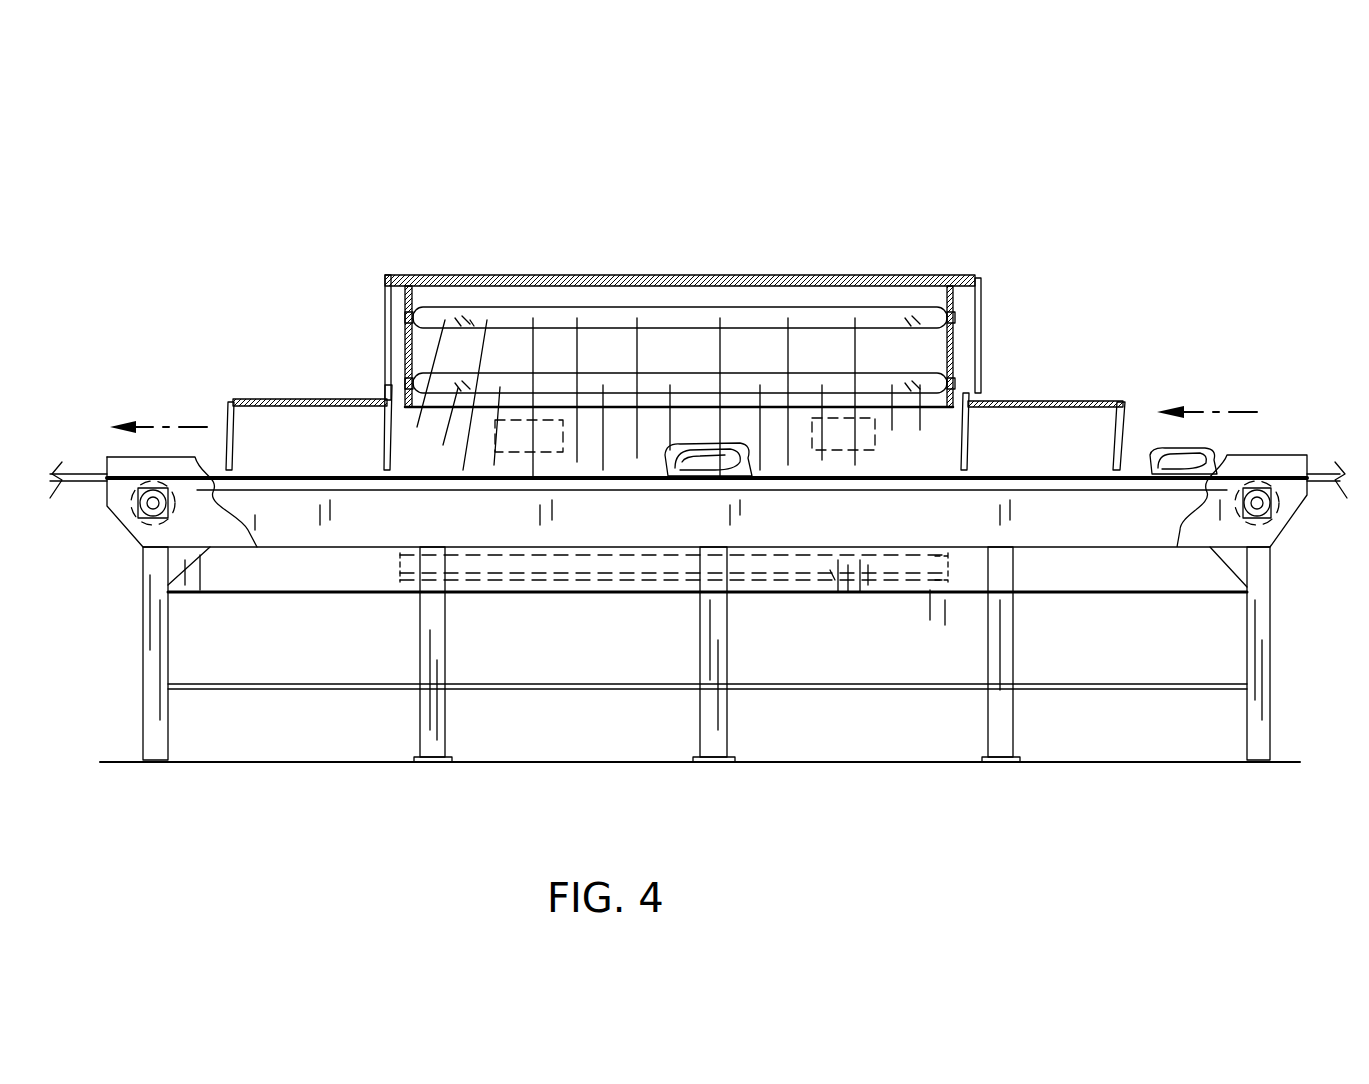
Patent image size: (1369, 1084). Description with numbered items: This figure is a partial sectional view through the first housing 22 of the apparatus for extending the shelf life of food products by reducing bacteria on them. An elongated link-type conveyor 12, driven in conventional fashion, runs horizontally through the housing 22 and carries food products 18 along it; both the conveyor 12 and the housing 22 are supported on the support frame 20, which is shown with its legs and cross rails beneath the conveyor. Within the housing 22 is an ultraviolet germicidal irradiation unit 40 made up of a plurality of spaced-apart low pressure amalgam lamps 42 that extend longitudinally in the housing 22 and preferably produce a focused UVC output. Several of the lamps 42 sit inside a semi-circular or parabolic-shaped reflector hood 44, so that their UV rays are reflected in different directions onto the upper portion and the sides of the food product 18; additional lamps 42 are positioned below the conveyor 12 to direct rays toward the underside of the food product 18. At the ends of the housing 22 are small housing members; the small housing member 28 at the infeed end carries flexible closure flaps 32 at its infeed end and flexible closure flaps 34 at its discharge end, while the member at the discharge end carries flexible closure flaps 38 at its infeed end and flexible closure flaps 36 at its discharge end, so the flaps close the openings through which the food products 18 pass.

The conveyor 12 is at (1326, 462).
The food products 18 is at (1200, 445).
The support frame 20 is at (688, 755).
The first housing 22 is at (913, 265).
The small housing member 28 is at (1070, 400).
The flexible closure flaps 32 is at (1120, 405).
The flexible closure flaps 34 is at (968, 440).
The flexible closure flaps 36 is at (246, 440).
The flexible closure flaps 38 is at (383, 440).
The ultraviolet germicidal irradiation unit 40 is at (687, 290).
The low pressure amalgam lamps 42 is at (912, 320).
The reflector hood 44 is at (465, 293).